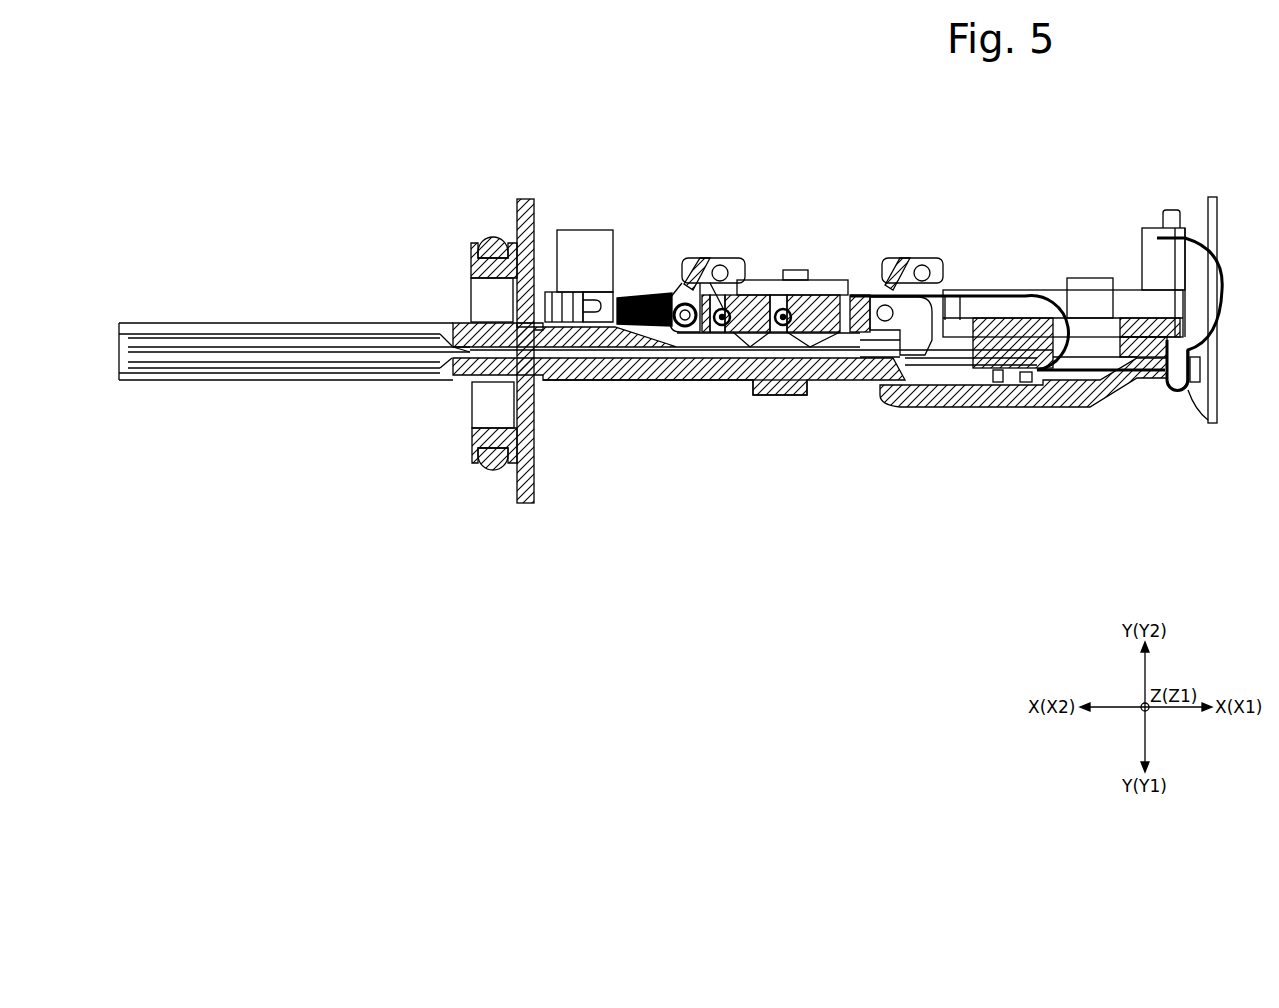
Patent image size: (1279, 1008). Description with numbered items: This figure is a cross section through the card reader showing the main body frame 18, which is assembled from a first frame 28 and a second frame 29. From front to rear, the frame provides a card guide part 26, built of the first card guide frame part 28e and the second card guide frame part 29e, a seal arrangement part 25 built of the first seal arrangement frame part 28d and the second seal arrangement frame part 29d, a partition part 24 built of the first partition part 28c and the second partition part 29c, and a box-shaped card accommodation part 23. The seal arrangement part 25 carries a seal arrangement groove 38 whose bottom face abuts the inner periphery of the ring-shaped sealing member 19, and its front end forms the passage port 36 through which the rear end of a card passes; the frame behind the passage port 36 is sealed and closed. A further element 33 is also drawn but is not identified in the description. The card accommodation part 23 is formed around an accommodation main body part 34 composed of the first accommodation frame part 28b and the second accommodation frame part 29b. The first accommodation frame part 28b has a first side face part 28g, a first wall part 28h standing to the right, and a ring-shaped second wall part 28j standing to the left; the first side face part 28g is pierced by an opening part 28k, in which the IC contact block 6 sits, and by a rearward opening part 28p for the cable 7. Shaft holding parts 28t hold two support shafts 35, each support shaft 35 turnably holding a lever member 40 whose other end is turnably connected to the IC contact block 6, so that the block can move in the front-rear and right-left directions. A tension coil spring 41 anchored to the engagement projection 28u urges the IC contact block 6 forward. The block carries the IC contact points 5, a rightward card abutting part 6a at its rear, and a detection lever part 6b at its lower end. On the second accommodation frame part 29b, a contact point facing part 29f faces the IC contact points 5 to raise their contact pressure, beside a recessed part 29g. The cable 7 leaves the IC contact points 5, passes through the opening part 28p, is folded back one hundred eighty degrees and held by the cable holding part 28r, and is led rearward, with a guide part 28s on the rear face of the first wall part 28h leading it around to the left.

The card guide part 26 is at (198, 323).
The main body frame 18 is at (385, 323).
The first frame 28 is at (290, 308).
The first card guide frame part 28e is at (291, 323).
The inner tube 33 is at (178, 355).
The second frame 29 is at (284, 401).
The second card guide frame part 29e is at (277, 380).
The passage port 36 is at (473, 355).
The seal arrangement part 25 is at (457, 255).
The first seal arrangement frame part 28d is at (471, 243).
The seal arrangement groove 38 is at (492, 242).
The partition part 24 is at (517, 234).
The first partition part 28c is at (522, 199).
The second partition part 29c is at (528, 505).
The second accommodation frame part 29b is at (592, 383).
The card accommodation part 23 is at (648, 383).
The accommodation main body part 34 is at (737, 395).
The second seal arrangement frame part 29d is at (477, 470).
The sealing member 19 is at (497, 470).
The first accommodation frame part 28b is at (582, 287).
The engagement projection 28u is at (598, 295).
The tension coil spring 41 is at (640, 297).
The lever member 40 is at (735, 258).
The support shaft 35 is at (720, 263).
The shaft holding part 28t is at (693, 258).
The IC contact point 5 is at (740, 337).
The IC contact block 6 is at (827, 280).
The detection lever part 6b is at (792, 270).
The card abutting part 6a is at (913, 377).
The contact point facing part 29f is at (853, 350).
The recessed part 29g is at (955, 382).
The cable holding part 28r is at (987, 375).
The opening part 28k is at (965, 320).
The opening part 28p is at (1108, 327).
The cable 7 is at (1052, 290).
The first side face part 28g is at (1163, 303).
The second wall part 28j is at (1133, 287).
The first wall part 28h is at (1147, 385).
The guide part 28s is at (1205, 370).